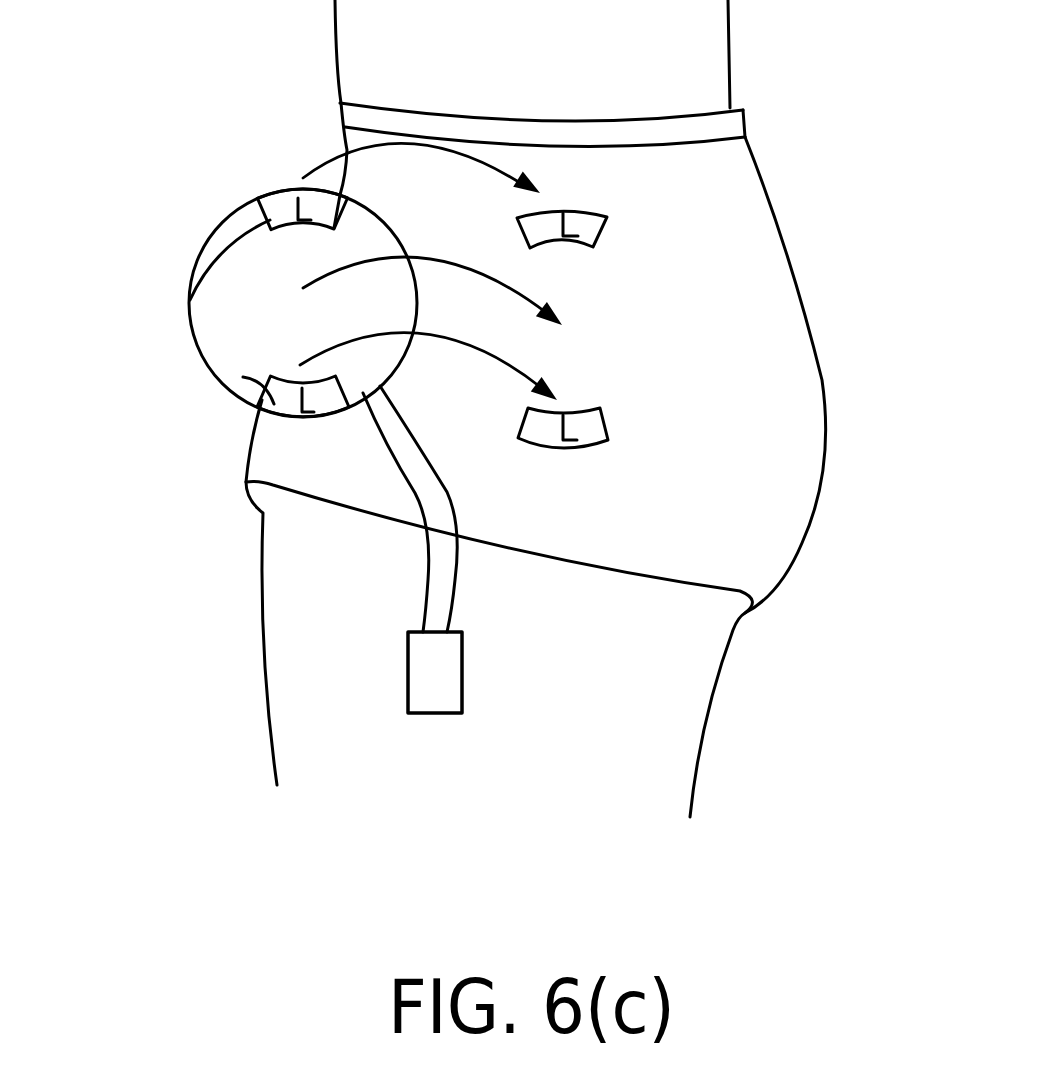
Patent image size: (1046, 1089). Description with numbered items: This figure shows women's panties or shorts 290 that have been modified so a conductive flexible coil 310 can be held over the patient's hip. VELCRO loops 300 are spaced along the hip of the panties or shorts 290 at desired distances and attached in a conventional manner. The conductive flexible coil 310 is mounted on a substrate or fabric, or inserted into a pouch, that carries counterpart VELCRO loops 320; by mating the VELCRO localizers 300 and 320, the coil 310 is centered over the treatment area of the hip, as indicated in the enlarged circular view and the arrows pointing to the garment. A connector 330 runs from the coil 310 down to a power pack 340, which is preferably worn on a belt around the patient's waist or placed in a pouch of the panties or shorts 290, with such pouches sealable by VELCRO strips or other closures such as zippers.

The panties or shorts 290 is at (753, 547).
The VELCRO loops 300 is at (593, 233).
The conductive flexible coil 310 is at (197, 212).
The VELCRO loops 320 is at (243, 377).
The connector 330 is at (427, 562).
The power pack 340 is at (437, 714).